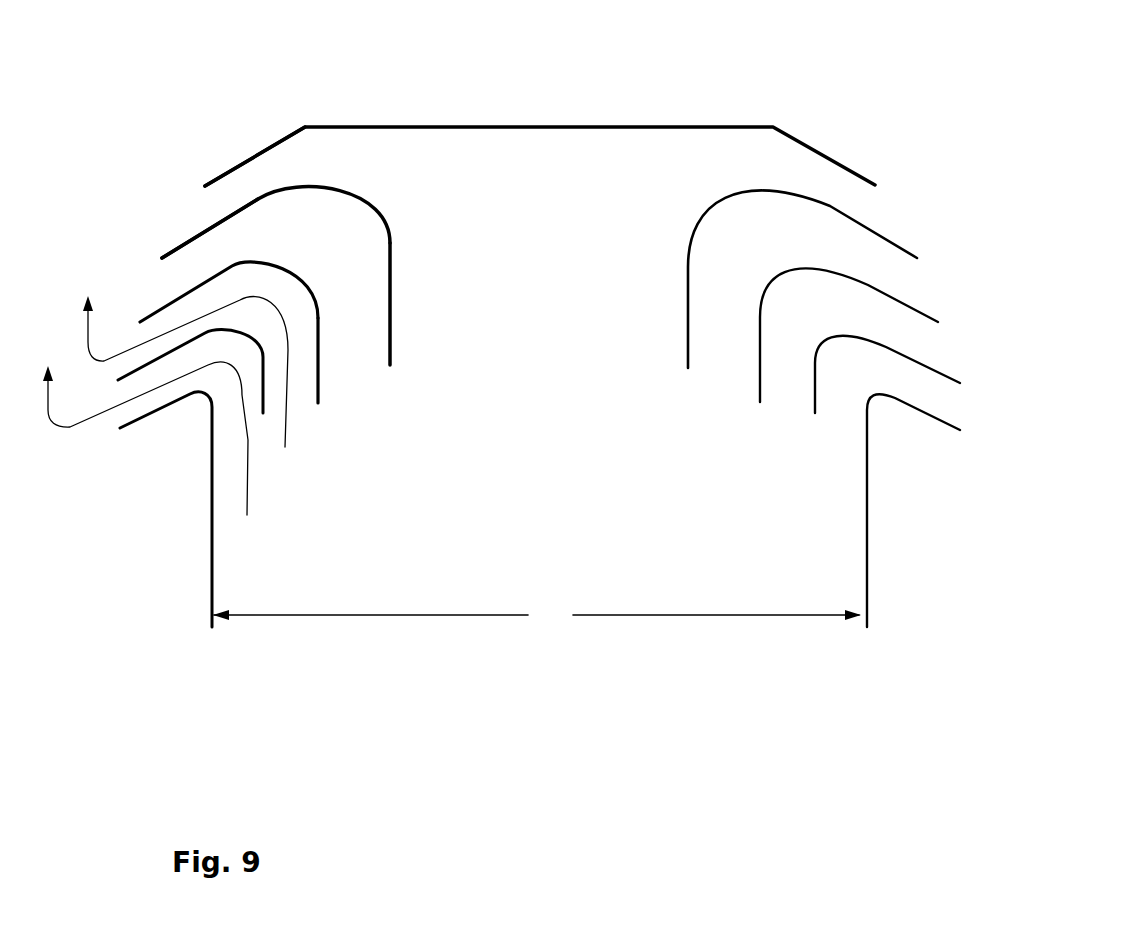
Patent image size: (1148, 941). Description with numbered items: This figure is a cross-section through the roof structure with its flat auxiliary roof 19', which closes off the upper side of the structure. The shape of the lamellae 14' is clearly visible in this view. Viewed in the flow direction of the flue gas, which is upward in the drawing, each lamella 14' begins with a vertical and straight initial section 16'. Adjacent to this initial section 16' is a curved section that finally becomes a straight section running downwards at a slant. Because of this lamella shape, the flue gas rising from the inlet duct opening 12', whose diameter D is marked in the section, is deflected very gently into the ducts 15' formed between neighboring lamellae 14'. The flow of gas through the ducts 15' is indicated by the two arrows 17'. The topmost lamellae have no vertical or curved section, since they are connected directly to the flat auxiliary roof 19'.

The auxiliary roof 19' is at (540, 111).
The lamellae 14' is at (222, 174).
The ducts 15' is at (265, 236).
The initial section of the lamellae 16' is at (381, 338).
The gas flow 17' is at (165, 405).
The inlet duct opening 12' is at (537, 626).